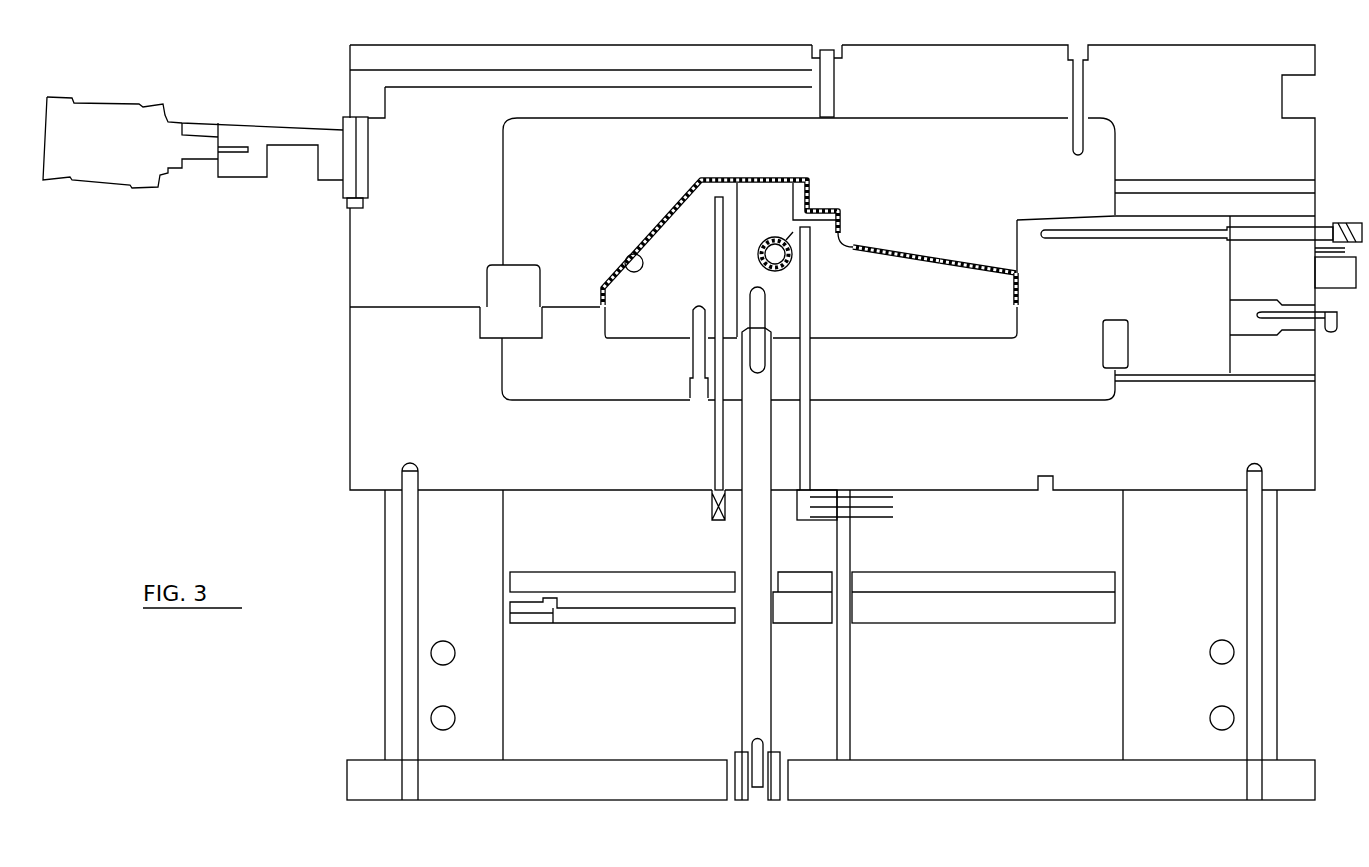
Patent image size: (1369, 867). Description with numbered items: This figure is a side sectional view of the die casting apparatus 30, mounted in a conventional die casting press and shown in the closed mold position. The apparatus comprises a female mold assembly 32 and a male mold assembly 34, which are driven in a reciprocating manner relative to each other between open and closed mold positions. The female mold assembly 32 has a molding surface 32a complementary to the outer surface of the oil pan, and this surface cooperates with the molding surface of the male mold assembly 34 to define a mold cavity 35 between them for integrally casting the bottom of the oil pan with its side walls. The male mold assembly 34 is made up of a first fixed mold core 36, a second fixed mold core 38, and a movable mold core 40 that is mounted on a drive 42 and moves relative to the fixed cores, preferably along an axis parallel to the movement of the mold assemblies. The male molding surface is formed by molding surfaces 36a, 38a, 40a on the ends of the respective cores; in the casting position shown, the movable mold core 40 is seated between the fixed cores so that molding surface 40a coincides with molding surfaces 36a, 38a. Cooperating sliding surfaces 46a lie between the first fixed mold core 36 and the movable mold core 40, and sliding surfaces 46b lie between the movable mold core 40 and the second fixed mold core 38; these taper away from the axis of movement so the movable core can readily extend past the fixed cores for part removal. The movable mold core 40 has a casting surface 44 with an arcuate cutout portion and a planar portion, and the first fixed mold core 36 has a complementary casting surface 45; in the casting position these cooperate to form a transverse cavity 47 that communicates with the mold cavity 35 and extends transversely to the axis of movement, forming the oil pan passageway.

The die casting apparatus 30 is at (330, 363).
The female mold assembly 32 is at (593, 152).
The molding surface 32a is at (668, 213).
The male mold assembly 34 is at (898, 270).
The mold cavity 35 is at (945, 262).
The first fixed mold core 36 is at (923, 316).
The molding surface 36a is at (995, 270).
The second fixed mold core 38 is at (673, 303).
The molding surface 38a is at (626, 260).
The movable mold core 40 is at (762, 200).
The molding surface 40a is at (786, 190).
The drive 42 is at (760, 696).
The casting surface 44 is at (762, 240).
The casting surface 45 is at (782, 270).
The sliding surfaces 46a is at (835, 228).
The sliding surfaces 46b is at (737, 313).
The transverse cavity 47 is at (788, 250).